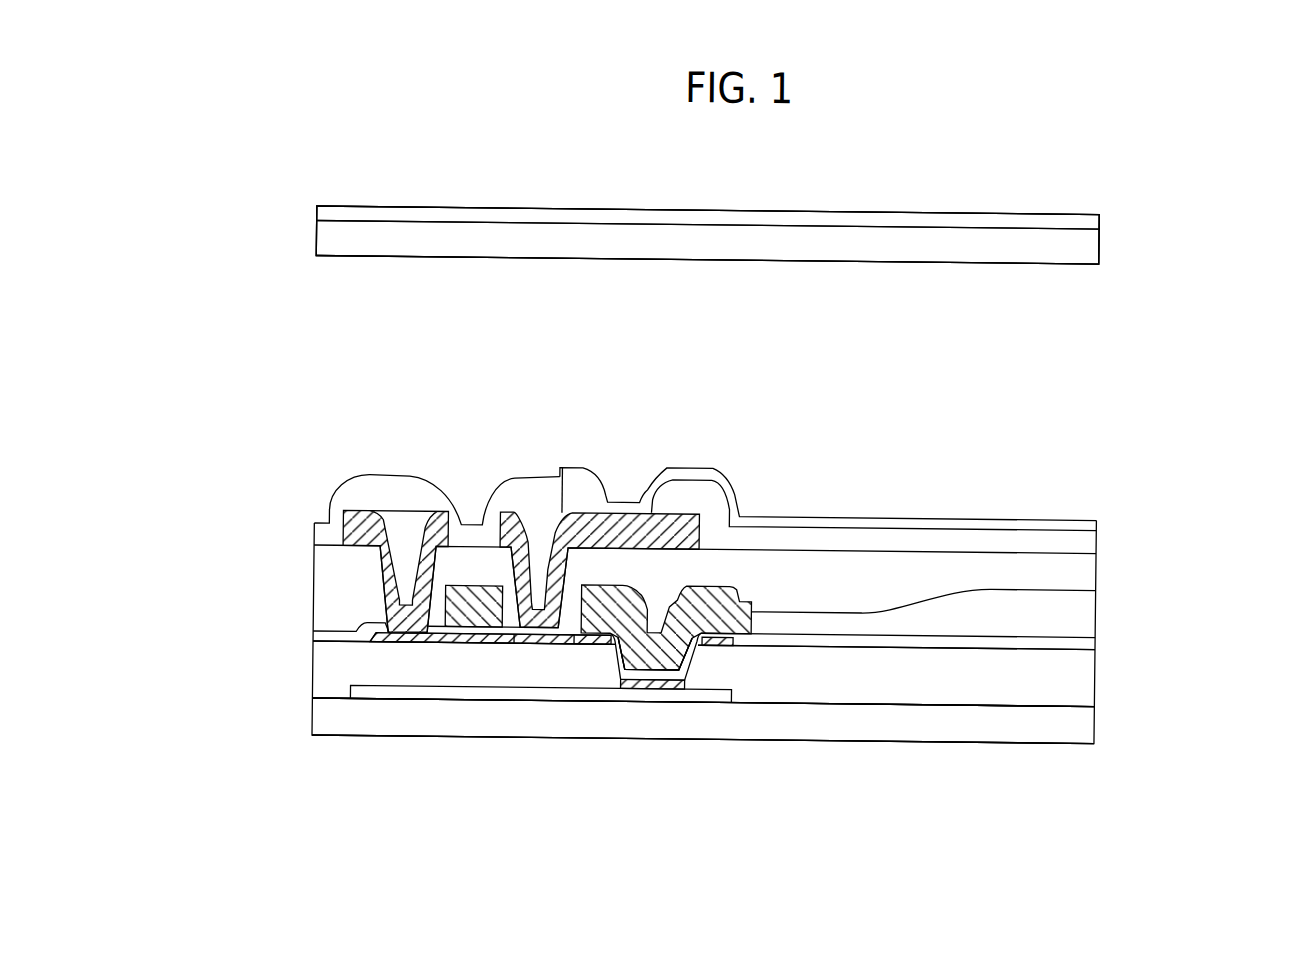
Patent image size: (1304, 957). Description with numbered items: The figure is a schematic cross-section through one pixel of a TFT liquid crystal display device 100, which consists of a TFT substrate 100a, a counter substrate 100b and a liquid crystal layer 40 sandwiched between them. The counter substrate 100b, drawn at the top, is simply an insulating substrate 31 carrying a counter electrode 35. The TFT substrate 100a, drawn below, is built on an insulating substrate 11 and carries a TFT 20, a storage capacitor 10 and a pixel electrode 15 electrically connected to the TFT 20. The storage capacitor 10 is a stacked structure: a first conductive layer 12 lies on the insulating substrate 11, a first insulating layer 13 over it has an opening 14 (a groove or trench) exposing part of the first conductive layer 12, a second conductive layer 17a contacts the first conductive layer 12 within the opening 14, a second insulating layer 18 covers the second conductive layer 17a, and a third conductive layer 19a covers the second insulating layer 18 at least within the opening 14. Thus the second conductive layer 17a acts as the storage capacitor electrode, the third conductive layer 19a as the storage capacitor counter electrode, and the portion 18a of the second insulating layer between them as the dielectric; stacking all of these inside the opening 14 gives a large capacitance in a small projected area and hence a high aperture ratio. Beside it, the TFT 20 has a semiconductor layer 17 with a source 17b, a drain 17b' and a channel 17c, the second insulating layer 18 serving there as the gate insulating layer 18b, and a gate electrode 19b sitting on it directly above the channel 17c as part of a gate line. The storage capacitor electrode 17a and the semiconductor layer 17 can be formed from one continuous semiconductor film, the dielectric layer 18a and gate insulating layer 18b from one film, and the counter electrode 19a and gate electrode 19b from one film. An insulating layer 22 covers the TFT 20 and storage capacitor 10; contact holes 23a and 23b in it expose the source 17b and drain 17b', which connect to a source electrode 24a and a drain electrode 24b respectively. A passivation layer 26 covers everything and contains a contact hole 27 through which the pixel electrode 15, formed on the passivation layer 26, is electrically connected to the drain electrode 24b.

The TFT liquid crystal display device 100 is at (1062, 177).
The counter substrate 100b is at (1171, 179).
The insulating substrate 31 is at (1093, 211).
The counter electrode 35 is at (1094, 248).
The TFT substrate 100a is at (1194, 502).
The liquid crystal layer 40 is at (893, 368).
The storage capacitor 10 is at (822, 712).
The insulating substrate 11 is at (1095, 731).
The first conductive layer 12 is at (712, 693).
The first insulating layer 13 is at (889, 693).
The second insulating layer 18 is at (1094, 634).
The storage capacitor dielectric layer 18a is at (642, 673).
The gate insulating layer 18b is at (459, 628).
The semiconductor layer 17 is at (375, 794).
The second conductive layer 17a is at (612, 665).
The source 17b is at (450, 720).
The drain 17b' is at (451, 720).
The channel 17c is at (474, 636).
The third conductive layer 19a is at (1094, 582).
The gate electrode 19b is at (478, 591).
The opening 14 is at (658, 586).
The insulating layer 22 is at (1093, 566).
The contact hole 23a is at (405, 522).
The contact hole 23b is at (533, 518).
The source electrode 24a is at (363, 531).
The drain electrode 24b is at (506, 515).
The passivation layer 26 is at (1093, 536).
The contact hole 27 is at (624, 466).
The pixel electrode 15 is at (863, 513).
The TFT 20 is at (372, 667).